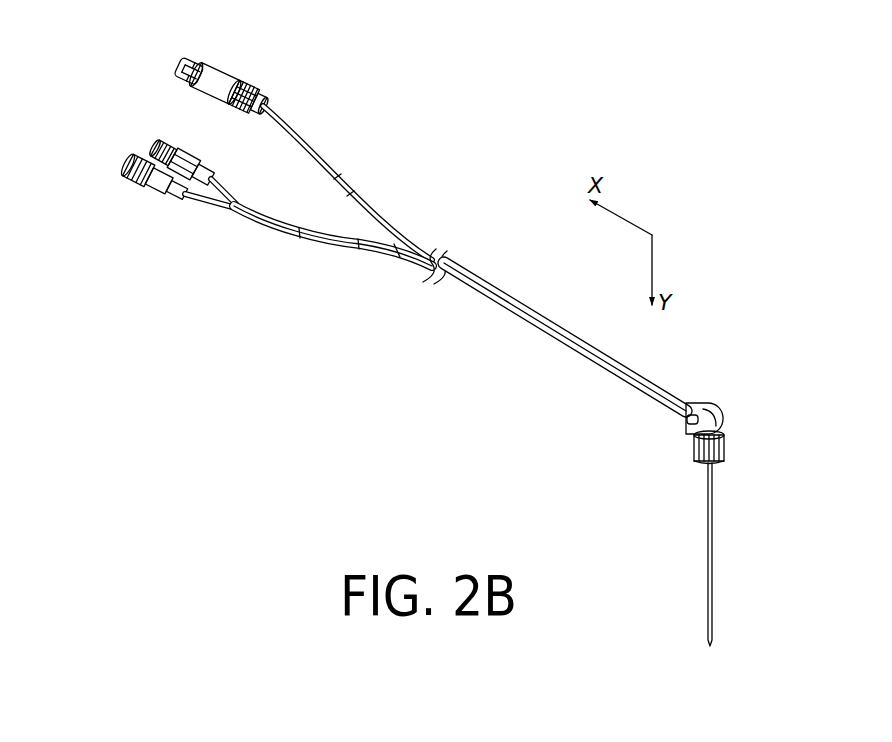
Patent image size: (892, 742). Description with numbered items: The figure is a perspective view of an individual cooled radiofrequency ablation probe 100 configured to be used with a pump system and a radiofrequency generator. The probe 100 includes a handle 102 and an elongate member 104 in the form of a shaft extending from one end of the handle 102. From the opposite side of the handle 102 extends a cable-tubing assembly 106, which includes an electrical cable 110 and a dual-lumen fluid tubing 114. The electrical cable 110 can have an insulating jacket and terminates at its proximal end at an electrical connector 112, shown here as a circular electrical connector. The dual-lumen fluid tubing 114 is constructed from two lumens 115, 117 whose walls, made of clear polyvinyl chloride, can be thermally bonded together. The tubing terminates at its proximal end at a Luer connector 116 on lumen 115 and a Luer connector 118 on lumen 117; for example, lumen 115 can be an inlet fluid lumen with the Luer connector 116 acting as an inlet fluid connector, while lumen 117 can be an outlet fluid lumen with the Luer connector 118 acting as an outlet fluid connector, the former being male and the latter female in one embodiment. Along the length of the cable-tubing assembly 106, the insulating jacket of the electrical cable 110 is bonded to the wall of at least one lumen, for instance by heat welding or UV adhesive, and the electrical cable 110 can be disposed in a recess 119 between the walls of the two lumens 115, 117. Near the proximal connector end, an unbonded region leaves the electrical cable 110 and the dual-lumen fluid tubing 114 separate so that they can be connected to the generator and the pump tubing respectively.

The radiofrequency ablation probe 100 is at (456, 202).
The handle 102 is at (702, 395).
The elongate member 104 is at (721, 587).
The cable-tubing assembly 106 is at (482, 280).
The electrical cable 110 is at (328, 142).
The electrical connector 112 is at (205, 52).
The dual-lumen fluid tubing 114 is at (287, 248).
The lumen 115 is at (225, 179).
The Luer connector 116 is at (153, 143).
The lumen 117 is at (197, 209).
The Luer connector 118 is at (141, 200).
The recess 119 is at (388, 241).